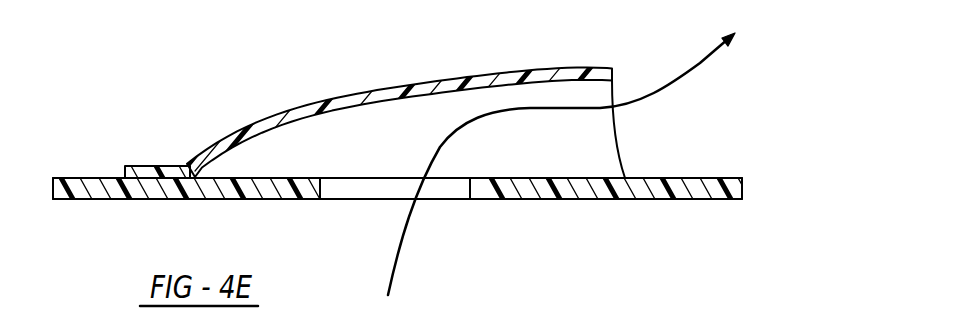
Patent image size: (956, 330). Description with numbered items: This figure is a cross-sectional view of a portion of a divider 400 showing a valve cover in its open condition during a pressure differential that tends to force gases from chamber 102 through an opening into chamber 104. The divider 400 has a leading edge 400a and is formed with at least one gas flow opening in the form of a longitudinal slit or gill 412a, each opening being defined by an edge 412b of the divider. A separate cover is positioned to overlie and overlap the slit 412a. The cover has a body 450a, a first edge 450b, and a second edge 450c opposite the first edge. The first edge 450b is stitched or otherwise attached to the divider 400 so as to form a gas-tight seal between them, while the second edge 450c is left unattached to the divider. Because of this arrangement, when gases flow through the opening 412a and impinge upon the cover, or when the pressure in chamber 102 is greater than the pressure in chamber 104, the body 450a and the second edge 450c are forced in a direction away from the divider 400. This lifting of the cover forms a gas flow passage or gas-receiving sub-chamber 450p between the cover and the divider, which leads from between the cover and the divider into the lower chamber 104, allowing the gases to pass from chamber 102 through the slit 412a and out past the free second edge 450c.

The divider 400 is at (195, 190).
The leading edge 400a is at (690, 200).
The chamber 102 is at (335, 266).
The chamber 104 is at (400, 42).
The longitudinal slit or gill 412a is at (455, 188).
The edge 412b is at (473, 188).
The body 450a is at (318, 110).
The first edge 450b is at (147, 166).
The second edge 450c is at (620, 138).
The gas flow passage 450p is at (416, 124).